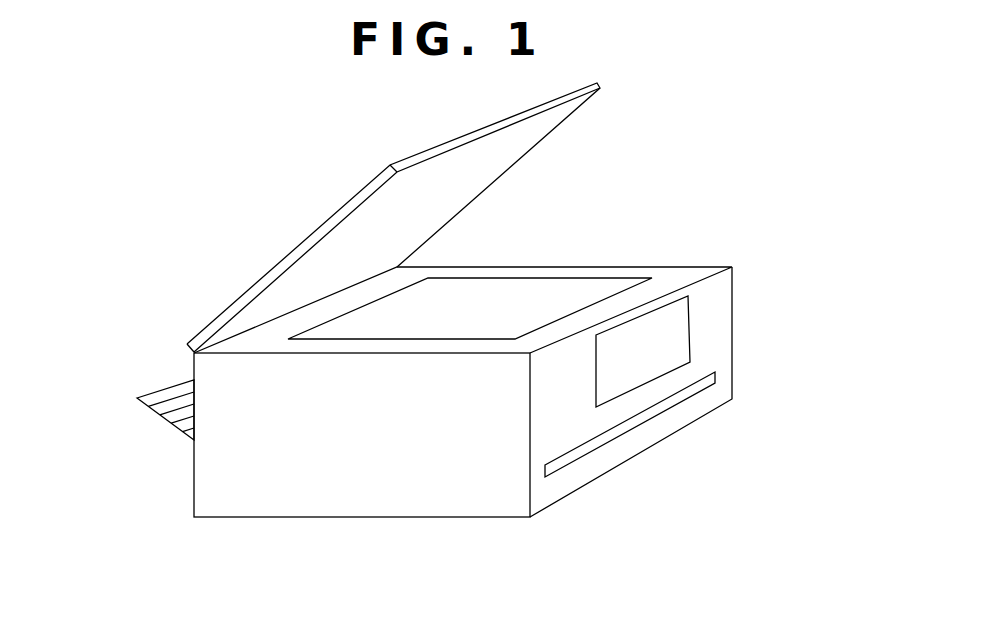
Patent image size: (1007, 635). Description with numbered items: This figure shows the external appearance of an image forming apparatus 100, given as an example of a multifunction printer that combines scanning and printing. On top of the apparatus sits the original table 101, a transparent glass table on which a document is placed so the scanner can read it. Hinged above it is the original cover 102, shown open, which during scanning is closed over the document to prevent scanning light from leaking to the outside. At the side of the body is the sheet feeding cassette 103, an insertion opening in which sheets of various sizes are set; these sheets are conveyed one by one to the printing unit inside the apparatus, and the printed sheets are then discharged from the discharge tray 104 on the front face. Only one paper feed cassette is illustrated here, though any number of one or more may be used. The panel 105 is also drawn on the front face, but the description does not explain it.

The image forming apparatus 100 is at (325, 518).
The original table 101 is at (557, 287).
The original cover 102 is at (317, 232).
The sheet feeding cassette 103 is at (150, 409).
The discharge tray 104 is at (713, 378).
The operation display panel 105 is at (690, 319).